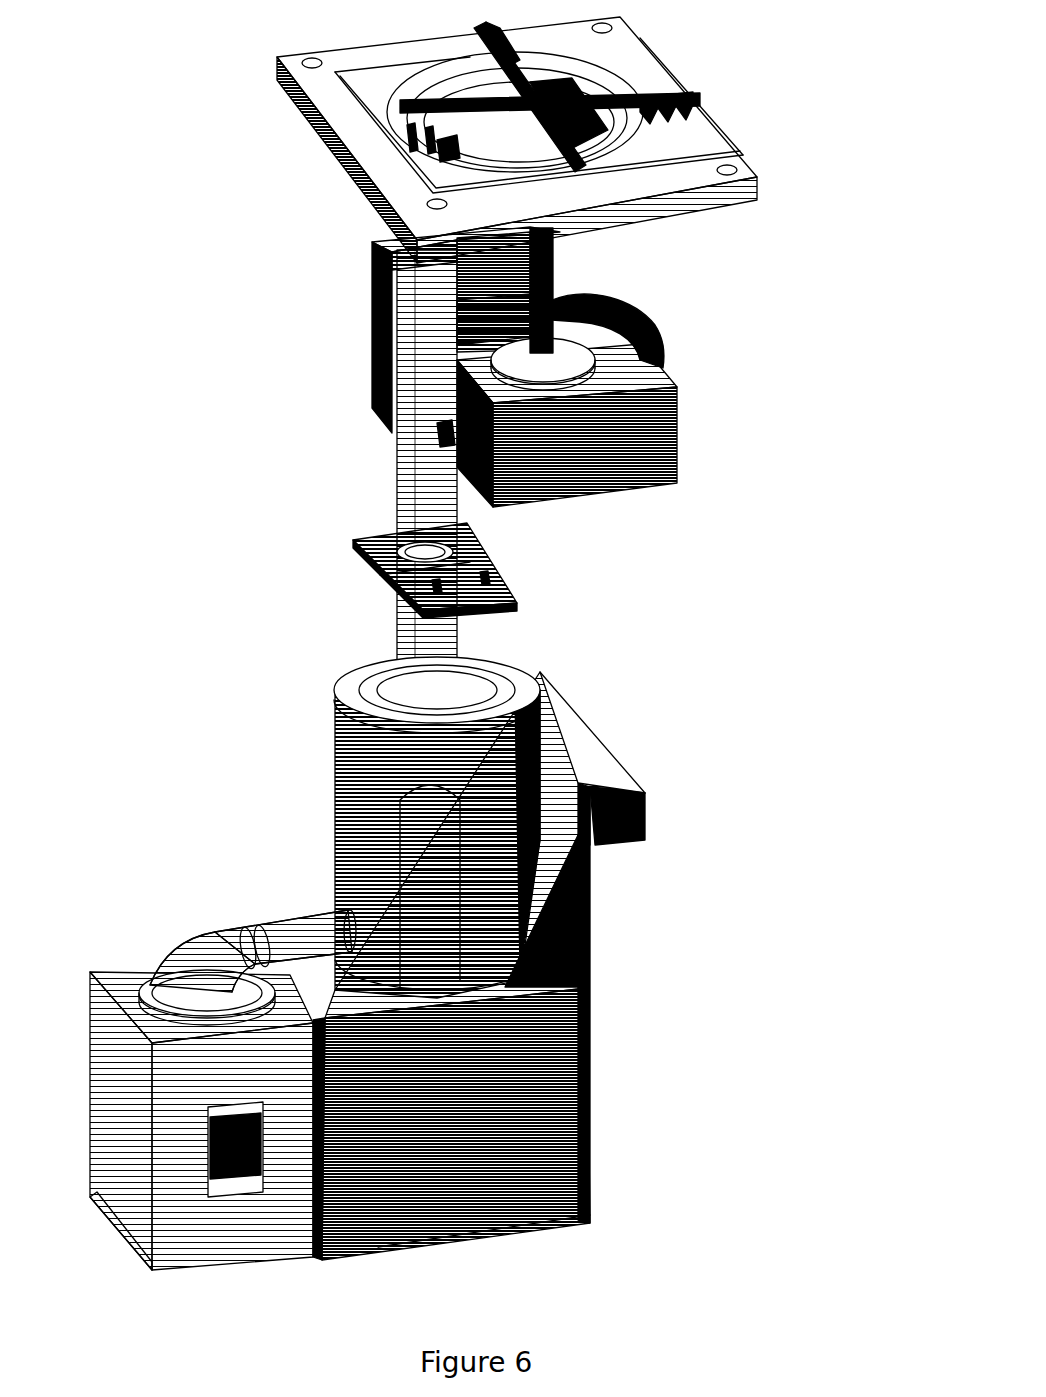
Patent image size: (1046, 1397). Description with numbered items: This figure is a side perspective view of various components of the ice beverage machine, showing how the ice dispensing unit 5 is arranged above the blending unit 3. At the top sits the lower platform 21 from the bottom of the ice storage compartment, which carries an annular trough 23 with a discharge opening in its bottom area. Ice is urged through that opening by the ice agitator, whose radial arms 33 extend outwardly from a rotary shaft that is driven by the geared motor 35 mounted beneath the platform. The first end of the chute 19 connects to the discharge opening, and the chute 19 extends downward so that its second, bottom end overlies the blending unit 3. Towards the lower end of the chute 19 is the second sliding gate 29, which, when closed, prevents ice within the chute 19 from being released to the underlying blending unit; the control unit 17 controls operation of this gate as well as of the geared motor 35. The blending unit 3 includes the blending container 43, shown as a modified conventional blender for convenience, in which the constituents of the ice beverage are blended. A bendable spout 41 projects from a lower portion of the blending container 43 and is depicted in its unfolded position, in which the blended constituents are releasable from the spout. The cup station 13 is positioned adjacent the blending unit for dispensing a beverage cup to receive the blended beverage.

The blending unit 3 is at (295, 721).
The ice dispensing unit 5 is at (548, 338).
The cup station 13 is at (117, 1137).
The control unit 17 is at (380, 290).
The chute 19 is at (405, 508).
The lower platform 21 is at (576, 137).
The annular trough 23 is at (655, 135).
The second sliding gate 29 is at (473, 610).
The radial arms 33 is at (652, 77).
The geared motor 35 is at (623, 427).
The bendable spout 41 is at (203, 953).
The blending container 43 is at (447, 873).